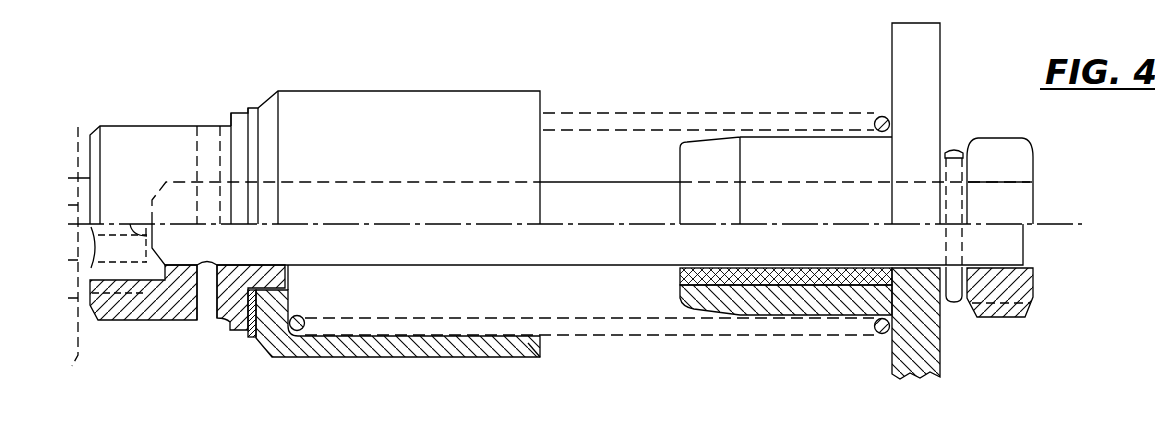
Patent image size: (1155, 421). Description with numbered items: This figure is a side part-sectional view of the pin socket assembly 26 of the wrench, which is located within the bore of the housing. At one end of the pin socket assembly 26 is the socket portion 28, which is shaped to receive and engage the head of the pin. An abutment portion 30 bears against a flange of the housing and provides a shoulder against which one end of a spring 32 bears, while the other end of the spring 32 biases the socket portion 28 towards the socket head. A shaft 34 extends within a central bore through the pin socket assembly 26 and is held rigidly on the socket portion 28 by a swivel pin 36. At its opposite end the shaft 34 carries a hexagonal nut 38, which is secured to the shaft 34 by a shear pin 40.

The pin socket assembly 26 is at (473, 87).
The socket portion 28 is at (146, 303).
The abutment portion 30 is at (768, 299).
The spring 32 is at (806, 328).
The shaft 34 is at (334, 198).
The swivel pin 36 is at (212, 152).
The hexagonal nut 38 is at (1013, 165).
The shear pin 40 is at (955, 152).